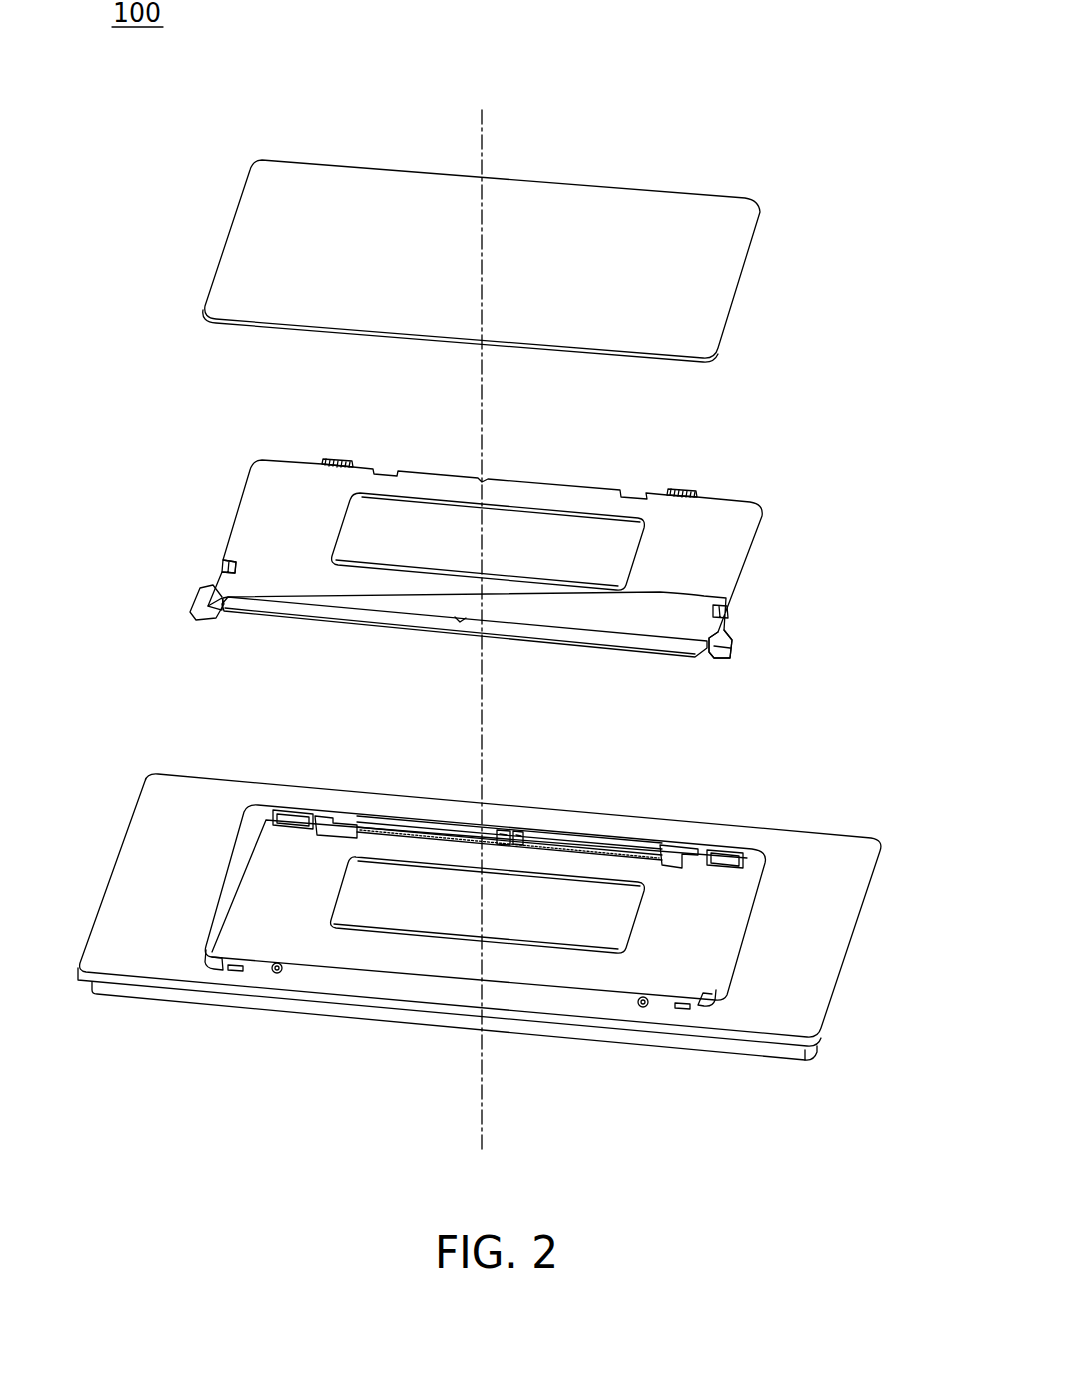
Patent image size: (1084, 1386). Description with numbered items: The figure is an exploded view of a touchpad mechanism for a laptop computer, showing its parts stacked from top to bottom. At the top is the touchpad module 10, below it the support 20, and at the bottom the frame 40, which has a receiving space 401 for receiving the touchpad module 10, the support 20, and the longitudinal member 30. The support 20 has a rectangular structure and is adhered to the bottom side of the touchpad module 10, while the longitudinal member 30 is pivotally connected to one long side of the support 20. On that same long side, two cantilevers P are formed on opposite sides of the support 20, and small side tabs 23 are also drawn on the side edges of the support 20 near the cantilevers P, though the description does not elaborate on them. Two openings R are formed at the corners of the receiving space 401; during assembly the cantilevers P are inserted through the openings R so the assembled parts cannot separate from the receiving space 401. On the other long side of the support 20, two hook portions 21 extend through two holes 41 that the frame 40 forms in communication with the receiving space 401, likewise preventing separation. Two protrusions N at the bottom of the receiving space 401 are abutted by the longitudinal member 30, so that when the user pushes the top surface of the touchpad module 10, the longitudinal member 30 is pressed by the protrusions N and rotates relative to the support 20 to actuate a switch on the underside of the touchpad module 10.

The touchpad module 10 is at (762, 205).
The support 20 is at (490, 567).
The hook portions 21 is at (336, 459).
The positioning tabs 23 is at (221, 567).
The cantilevers P is at (202, 603).
The longitudinal member 30 is at (660, 653).
The frame 40 is at (501, 919).
The receiving space 401 is at (703, 932).
The holes 41 is at (340, 822).
The protrusions N is at (278, 975).
The openings R is at (212, 970).